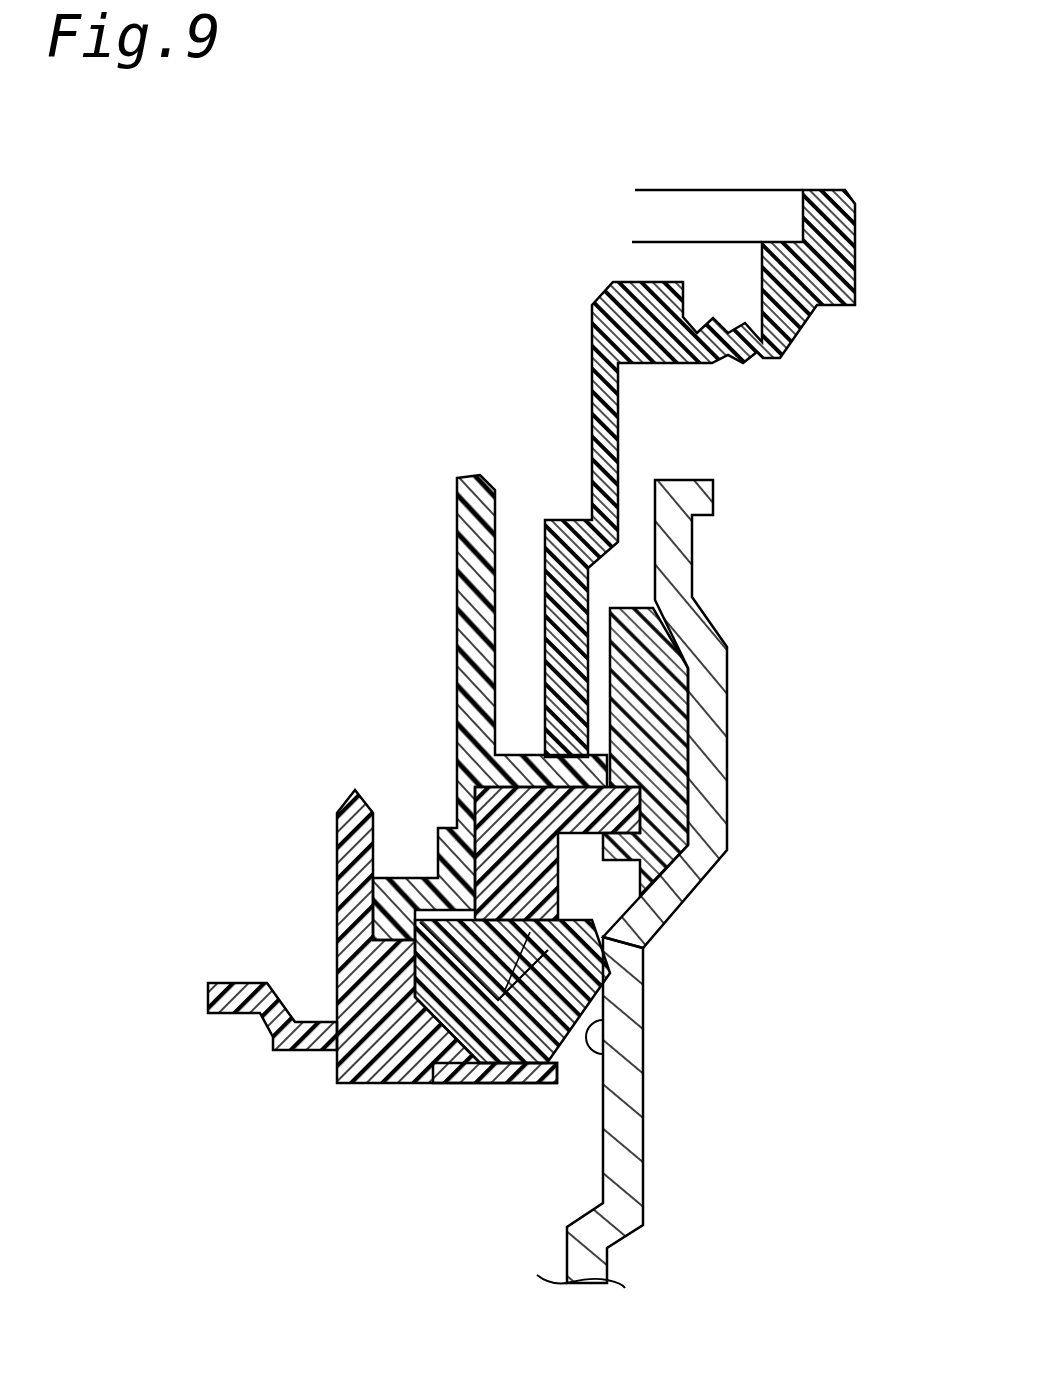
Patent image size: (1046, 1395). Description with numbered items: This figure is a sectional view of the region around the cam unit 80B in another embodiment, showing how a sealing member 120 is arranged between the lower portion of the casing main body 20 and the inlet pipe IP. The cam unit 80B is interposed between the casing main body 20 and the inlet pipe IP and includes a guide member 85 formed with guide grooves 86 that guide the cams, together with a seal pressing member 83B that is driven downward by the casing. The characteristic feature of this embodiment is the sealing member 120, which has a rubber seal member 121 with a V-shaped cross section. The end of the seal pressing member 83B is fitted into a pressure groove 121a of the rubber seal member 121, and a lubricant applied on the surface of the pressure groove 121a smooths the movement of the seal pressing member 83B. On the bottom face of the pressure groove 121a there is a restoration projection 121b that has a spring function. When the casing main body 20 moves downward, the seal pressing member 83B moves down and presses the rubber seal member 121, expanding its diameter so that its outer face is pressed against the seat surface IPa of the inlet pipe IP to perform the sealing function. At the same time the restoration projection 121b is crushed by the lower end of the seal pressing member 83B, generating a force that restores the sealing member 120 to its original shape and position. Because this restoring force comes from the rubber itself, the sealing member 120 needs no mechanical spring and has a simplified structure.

The casing main body 20 is at (620, 410).
The cam unit 80B is at (690, 683).
The guide groove 86 is at (690, 712).
The guide member 85 is at (690, 748).
The seal pressing member 83B is at (653, 803).
The sealing member 120 is at (597, 922).
The rubber seal member 121 is at (605, 937).
The pressure groove 121a is at (603, 1000).
The restoration projection 121b is at (440, 1083).
The inlet pipe IP is at (642, 1188).
The seat surface IPa is at (603, 1057).